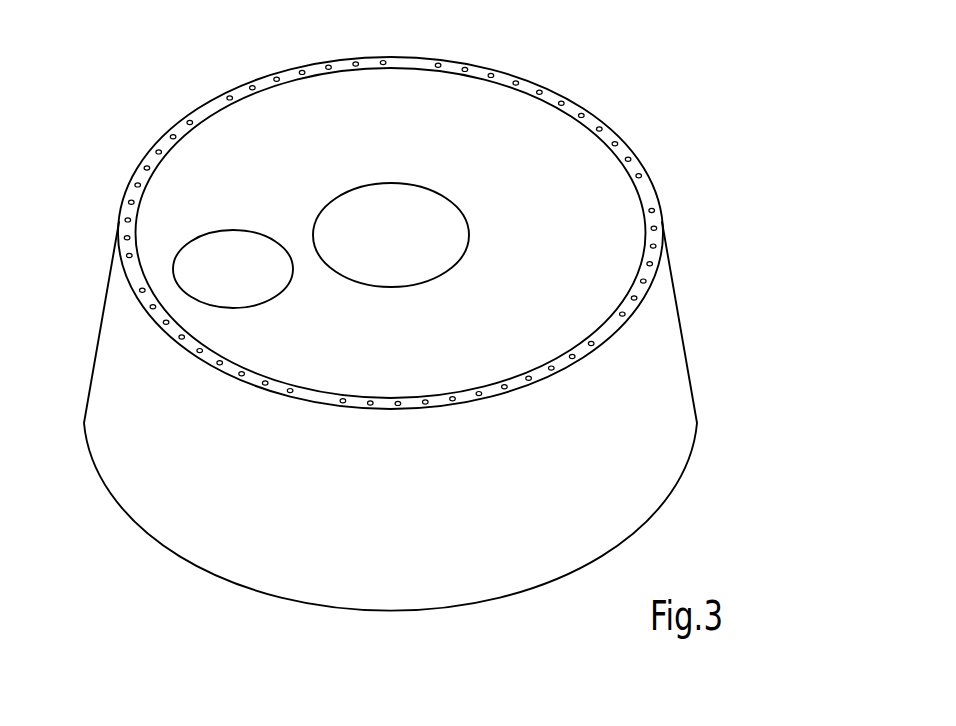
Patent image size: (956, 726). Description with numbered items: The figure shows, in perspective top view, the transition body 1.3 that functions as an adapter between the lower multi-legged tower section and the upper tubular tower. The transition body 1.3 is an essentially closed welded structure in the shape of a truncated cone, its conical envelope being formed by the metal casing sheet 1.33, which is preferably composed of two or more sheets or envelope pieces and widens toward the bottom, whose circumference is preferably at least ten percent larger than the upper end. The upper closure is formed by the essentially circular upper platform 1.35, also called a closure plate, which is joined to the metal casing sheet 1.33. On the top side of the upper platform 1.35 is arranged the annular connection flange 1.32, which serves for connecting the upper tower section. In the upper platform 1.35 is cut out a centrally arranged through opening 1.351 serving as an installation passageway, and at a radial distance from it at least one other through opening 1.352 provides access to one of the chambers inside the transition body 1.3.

The transition body 1.3 is at (679, 133).
The connection flange 1.32 is at (210, 110).
The metal casing sheet 1.33 is at (688, 356).
The upper platform 1.35 is at (542, 133).
The central through opening 1.351 is at (422, 205).
The through opening 1.352 is at (257, 252).